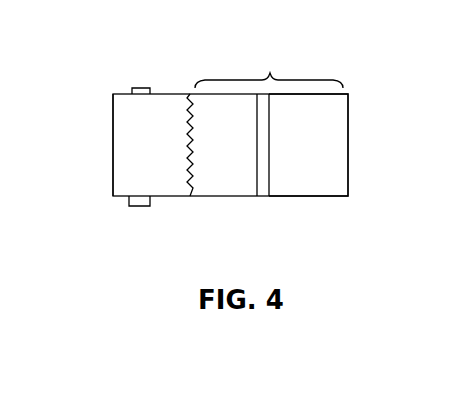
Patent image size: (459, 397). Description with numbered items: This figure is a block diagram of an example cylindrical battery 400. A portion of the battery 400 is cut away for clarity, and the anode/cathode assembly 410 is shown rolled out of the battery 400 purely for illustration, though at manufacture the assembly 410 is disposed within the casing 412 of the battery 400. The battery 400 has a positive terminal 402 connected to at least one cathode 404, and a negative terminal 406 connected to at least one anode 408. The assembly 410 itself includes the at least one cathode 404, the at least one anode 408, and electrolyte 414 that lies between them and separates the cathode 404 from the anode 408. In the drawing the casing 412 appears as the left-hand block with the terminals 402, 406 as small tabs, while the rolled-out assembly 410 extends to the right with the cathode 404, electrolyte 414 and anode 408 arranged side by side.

The cylindrical battery 400 is at (92, 138).
The positive terminal 402 is at (143, 92).
The cathode 404 is at (313, 198).
The negative terminal 406 is at (195, 198).
The anode 408 is at (139, 207).
The anode/cathode assembly 410 is at (270, 73).
The casing 412 is at (112, 180).
The electrolyte 414 is at (260, 198).